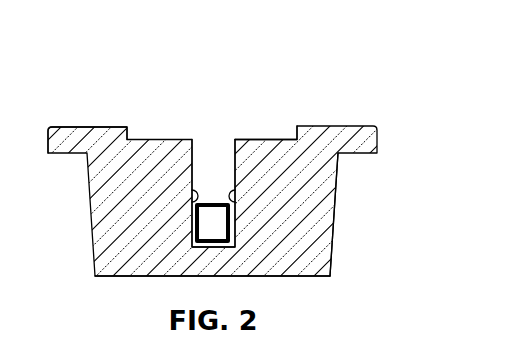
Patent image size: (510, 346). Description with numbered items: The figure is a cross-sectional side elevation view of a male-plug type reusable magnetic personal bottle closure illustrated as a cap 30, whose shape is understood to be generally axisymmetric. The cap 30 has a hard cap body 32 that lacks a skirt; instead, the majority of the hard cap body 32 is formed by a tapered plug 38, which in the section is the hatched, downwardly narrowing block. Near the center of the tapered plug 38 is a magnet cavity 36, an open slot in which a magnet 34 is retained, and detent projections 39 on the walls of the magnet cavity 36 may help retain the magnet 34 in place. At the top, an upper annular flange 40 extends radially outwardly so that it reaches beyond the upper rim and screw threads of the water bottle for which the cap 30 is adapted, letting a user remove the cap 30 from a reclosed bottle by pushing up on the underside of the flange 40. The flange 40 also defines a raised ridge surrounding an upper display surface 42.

The cap 30 is at (406, 180).
The hard cap body 32 is at (343, 217).
The magnet 34 is at (213, 203).
The magnet cavity 36 is at (224, 125).
The tapered plug 38 is at (330, 253).
The detent projections 39 is at (199, 201).
The upper annular flange 40 is at (67, 127).
The upper display surface 42 is at (260, 138).